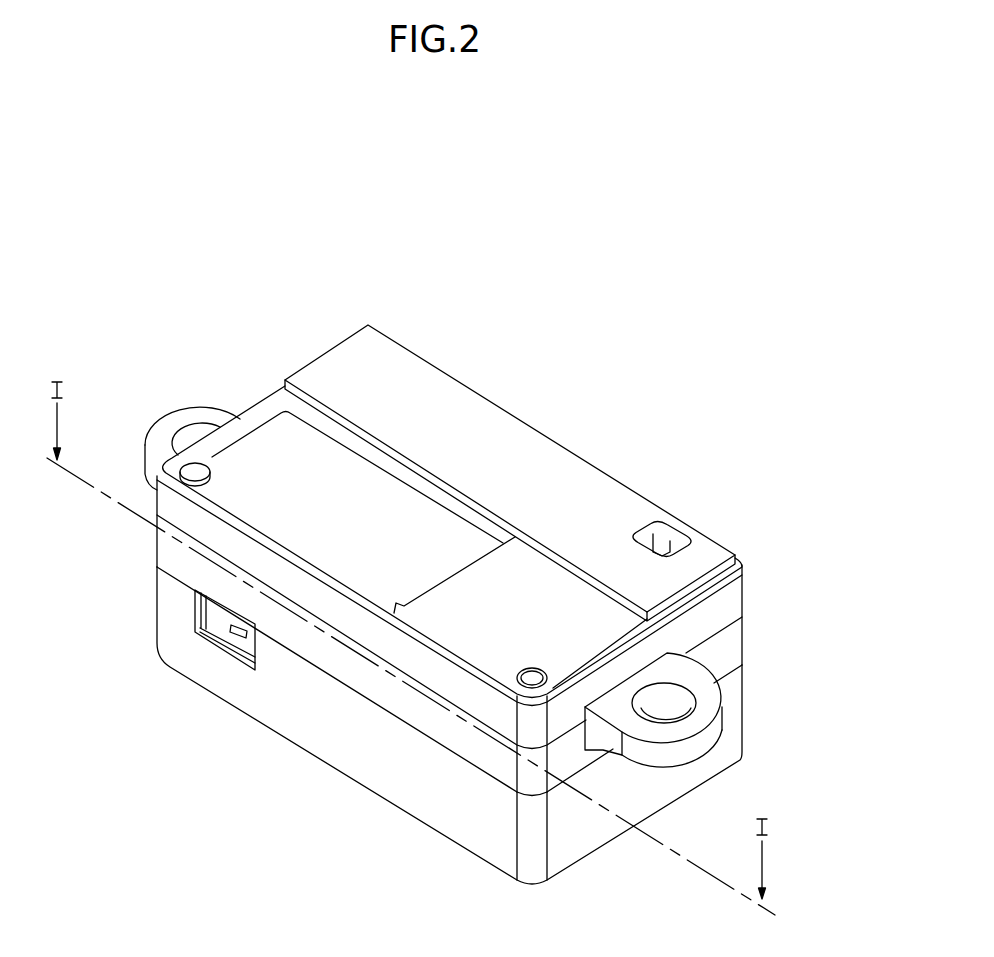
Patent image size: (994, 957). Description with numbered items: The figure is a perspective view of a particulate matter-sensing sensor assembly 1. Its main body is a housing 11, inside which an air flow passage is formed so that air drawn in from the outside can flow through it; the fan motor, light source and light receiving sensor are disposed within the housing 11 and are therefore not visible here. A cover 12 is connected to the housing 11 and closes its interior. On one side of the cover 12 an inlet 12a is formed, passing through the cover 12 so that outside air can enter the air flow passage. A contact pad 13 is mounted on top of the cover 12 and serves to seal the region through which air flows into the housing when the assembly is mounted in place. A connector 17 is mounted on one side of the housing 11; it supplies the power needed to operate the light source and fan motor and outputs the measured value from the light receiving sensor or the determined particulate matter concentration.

The particulate matter-sensing sensor assembly 1 is at (640, 207).
The housing 11 is at (318, 727).
The cover 12 is at (608, 630).
The inlet 12a is at (662, 548).
The contact pad 13 is at (410, 390).
The connector 17 is at (237, 632).